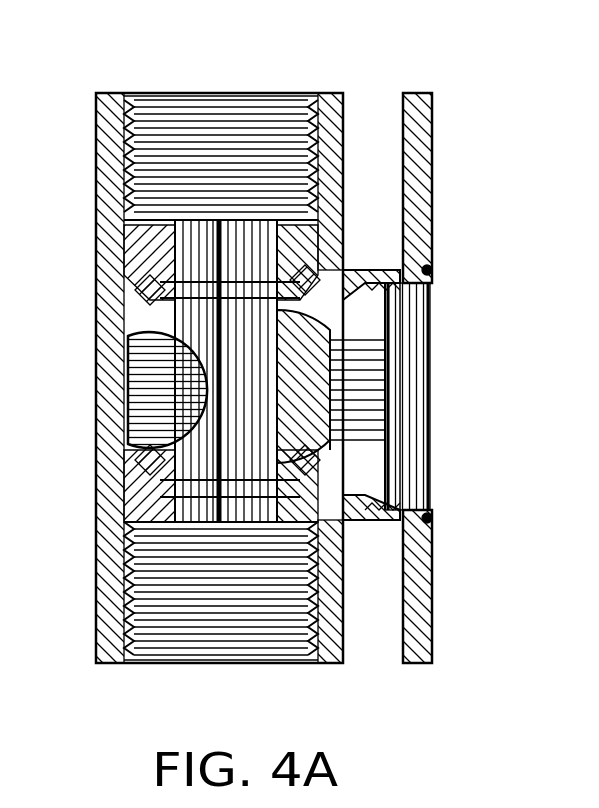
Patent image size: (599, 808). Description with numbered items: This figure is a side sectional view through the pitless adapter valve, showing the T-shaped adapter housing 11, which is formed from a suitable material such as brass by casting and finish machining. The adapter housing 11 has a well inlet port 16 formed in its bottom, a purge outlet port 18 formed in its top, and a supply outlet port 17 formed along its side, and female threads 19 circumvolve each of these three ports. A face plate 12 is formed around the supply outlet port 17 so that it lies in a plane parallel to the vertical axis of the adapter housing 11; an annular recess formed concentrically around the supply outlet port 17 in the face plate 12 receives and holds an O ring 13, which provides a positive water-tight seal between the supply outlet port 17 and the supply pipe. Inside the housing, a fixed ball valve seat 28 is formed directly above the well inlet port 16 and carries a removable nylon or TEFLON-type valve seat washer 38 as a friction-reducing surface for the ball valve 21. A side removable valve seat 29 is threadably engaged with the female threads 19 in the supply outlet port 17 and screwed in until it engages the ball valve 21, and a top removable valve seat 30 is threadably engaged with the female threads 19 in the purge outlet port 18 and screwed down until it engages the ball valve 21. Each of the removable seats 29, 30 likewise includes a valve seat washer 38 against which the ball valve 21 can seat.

The adapter housing 11 is at (110, 190).
The face plate 12 is at (432, 155).
The O ring 13 is at (433, 270).
The well inlet port 16 is at (208, 648).
The supply outlet port 17 is at (432, 365).
The purge outlet port 18 is at (203, 95).
The female threads 19 is at (262, 138).
The ball valve 21 is at (140, 316).
The fixed ball valve seat 28 is at (130, 497).
The side removable valve seat 29 is at (352, 502).
The top removable valve seat 30 is at (125, 262).
The valve seat washer 38 is at (133, 302).